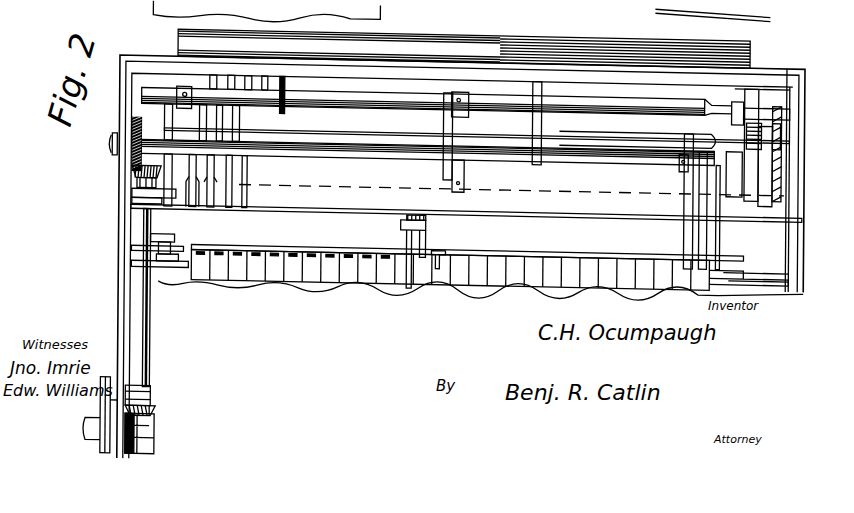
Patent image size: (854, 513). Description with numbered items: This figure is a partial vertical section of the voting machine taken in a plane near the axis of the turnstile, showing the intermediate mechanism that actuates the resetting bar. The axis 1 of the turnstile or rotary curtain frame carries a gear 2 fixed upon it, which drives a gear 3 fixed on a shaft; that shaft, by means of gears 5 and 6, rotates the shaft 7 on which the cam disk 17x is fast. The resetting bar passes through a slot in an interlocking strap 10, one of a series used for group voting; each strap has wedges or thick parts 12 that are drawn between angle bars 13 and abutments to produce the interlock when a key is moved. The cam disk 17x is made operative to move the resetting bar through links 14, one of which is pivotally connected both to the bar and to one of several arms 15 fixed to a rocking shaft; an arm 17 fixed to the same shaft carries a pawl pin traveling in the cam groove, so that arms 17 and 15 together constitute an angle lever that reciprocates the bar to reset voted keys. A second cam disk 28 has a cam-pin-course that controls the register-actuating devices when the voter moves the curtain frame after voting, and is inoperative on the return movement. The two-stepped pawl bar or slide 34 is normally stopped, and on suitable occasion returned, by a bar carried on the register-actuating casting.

The axis of turnstile 1 is at (88, 424).
The gear 2 is at (153, 447).
The gear 3 is at (157, 411).
The gear 5 is at (133, 177).
The gear 6 is at (133, 157).
The shaft 7 is at (321, 157).
The interlocking strap 10 is at (243, 219).
The wedge 12 is at (163, 345).
The angle bar 13 is at (157, 138).
The link 14 is at (447, 127).
The arm 15 is at (464, 106).
The arm 17 is at (784, 105).
The support piece 17x is at (777, 122).
The cam disk 28 is at (157, 184).
The two-stepped pawl bar 34 is at (372, 258).